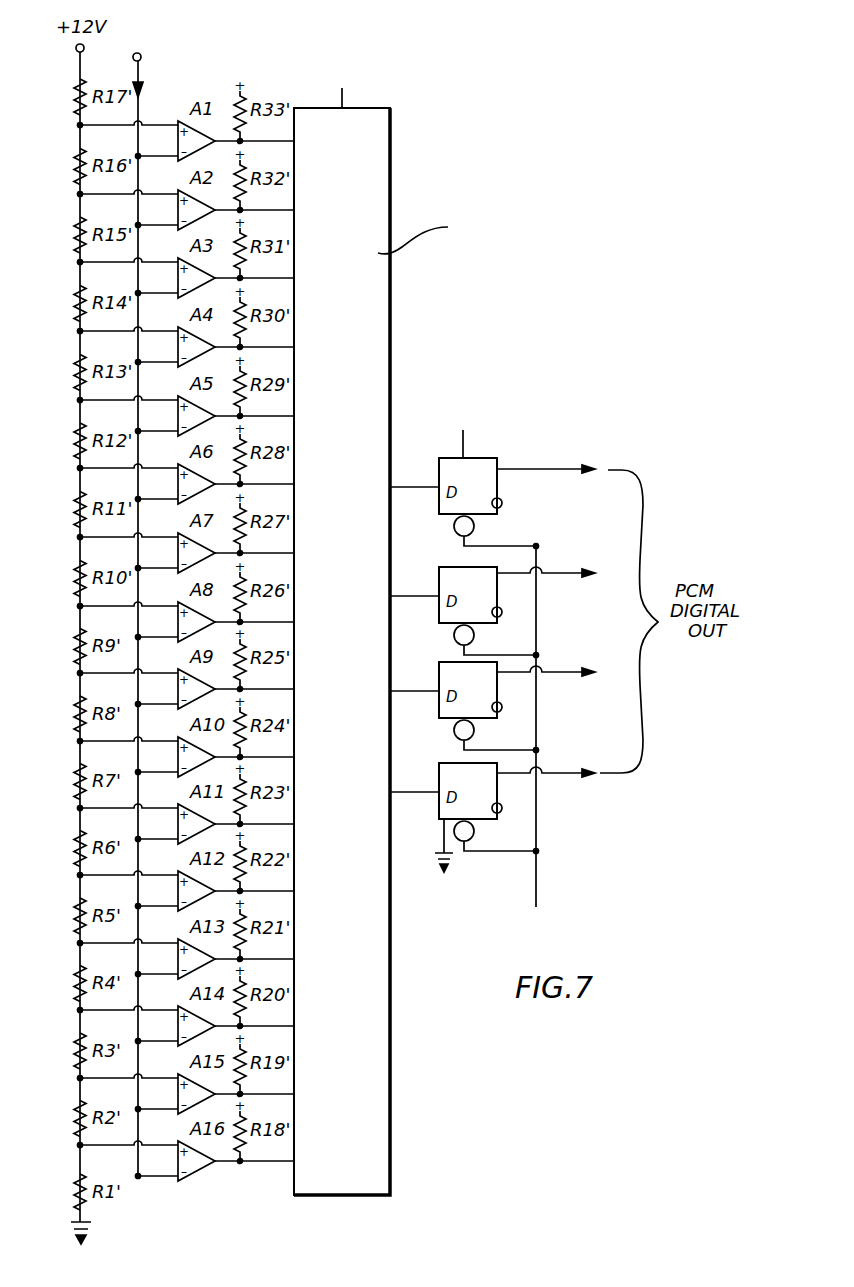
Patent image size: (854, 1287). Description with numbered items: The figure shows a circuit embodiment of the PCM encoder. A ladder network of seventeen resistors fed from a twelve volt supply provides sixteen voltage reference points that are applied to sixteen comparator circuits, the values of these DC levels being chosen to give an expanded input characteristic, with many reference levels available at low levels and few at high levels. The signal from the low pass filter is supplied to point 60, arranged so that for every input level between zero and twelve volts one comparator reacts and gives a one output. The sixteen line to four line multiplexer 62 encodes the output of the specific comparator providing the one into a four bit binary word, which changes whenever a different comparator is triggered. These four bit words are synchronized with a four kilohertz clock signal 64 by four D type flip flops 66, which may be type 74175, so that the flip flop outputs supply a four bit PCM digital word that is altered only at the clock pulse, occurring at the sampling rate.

The point 60 is at (137, 53).
The 16 line to 4 line multiplexer 62 is at (365, 984).
The clock signal 64 is at (536, 880).
The D type flip flops 66 is at (481, 468).